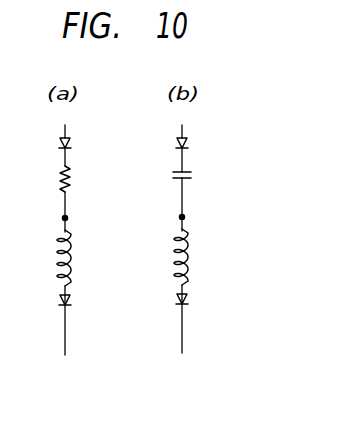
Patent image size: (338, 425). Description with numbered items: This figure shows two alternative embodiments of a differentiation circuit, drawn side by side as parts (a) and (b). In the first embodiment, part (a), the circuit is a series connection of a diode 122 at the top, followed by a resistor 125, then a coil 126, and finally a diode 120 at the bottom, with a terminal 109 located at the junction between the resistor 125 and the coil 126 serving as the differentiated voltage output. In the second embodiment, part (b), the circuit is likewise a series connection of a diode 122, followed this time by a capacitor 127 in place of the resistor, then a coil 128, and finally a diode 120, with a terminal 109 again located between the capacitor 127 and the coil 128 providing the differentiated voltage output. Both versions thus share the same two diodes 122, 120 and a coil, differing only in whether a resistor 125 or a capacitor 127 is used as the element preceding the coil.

The terminal 109 is at (63, 219).
The diode 120 is at (70, 303).
The diode 122 is at (68, 142).
The resistor 125 is at (68, 186).
The coil 126 is at (71, 260).
The capacitor 127 is at (191, 178).
The coil 128 is at (188, 258).